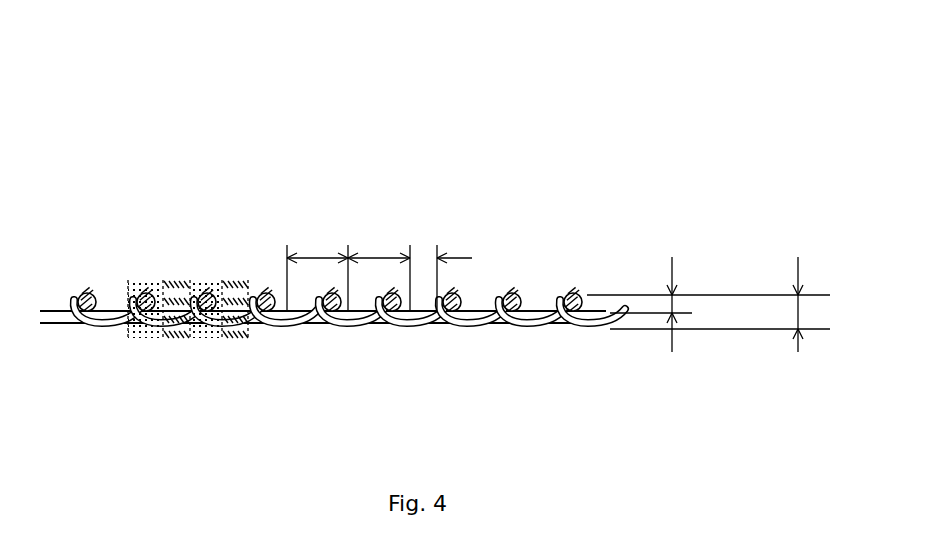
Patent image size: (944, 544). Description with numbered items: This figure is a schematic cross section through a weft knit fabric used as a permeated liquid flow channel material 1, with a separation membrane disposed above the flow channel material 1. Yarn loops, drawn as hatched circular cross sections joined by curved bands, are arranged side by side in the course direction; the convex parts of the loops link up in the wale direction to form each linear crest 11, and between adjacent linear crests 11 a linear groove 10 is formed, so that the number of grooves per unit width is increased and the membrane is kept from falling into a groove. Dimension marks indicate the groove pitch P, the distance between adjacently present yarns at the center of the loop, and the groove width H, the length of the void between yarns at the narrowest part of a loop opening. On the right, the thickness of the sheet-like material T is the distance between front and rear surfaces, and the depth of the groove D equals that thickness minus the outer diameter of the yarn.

The flow channel material 1 is at (578, 260).
The linear groove 10 is at (177, 279).
The linear crest 11 is at (237, 200).
The groove pitch P is at (317, 247).
The groove width H is at (422, 253).
The depth of groove D is at (673, 305).
The thickness of sheet-like material T is at (803, 307).